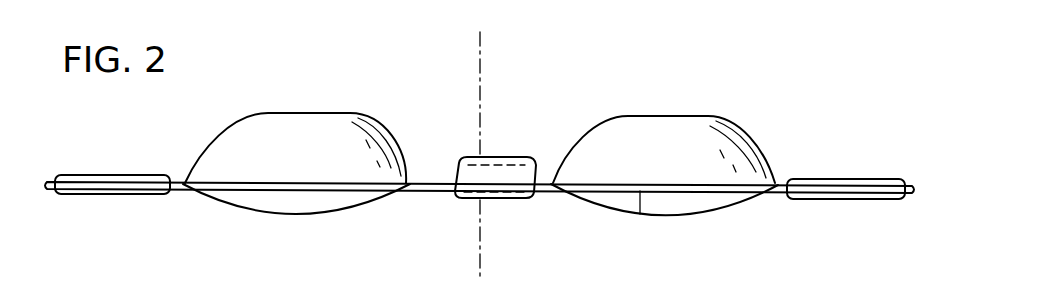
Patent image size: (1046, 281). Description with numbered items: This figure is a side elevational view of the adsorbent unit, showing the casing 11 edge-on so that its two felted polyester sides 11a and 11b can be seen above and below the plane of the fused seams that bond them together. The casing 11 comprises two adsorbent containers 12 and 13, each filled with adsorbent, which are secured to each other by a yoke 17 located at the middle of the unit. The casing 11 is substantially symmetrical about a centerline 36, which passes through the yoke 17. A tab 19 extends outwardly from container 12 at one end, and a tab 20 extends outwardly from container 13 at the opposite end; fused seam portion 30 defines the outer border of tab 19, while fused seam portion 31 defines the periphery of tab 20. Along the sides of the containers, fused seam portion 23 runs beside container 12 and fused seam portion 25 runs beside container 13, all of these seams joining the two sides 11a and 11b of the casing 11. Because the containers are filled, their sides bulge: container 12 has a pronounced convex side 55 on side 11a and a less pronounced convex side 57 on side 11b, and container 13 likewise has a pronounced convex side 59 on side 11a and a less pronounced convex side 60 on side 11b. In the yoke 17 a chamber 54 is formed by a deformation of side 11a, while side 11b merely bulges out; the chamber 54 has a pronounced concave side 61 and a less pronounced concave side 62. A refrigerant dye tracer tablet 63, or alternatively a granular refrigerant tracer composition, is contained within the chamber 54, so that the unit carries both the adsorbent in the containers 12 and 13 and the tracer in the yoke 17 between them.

The tab 20 is at (76, 176).
The tab 19 is at (842, 180).
The yoke 17 is at (413, 191).
The fused seam portion 31 is at (93, 195).
The fused seam portion 30 is at (842, 200).
The adsorbent container 13 is at (305, 113).
The pronounced convex side 59 is at (272, 130).
The less pronounced convex side 60 is at (240, 199).
The fused seam portion 25 is at (330, 200).
The centerline 36 is at (480, 80).
The chamber 54 is at (520, 157).
The pronounced concave side 61 is at (466, 157).
The refrigerant dye tracer tablet 63 is at (515, 176).
The less pronounced concave side 62 is at (522, 199).
The adsorbent container 12 is at (648, 117).
The pronounced convex side 55 is at (612, 125).
The casing side 11a is at (730, 120).
The less pronounced convex side 57 is at (603, 200).
The casing 11 is at (640, 214).
The fused seam portion 23 is at (697, 200).
The casing side 11b is at (753, 205).